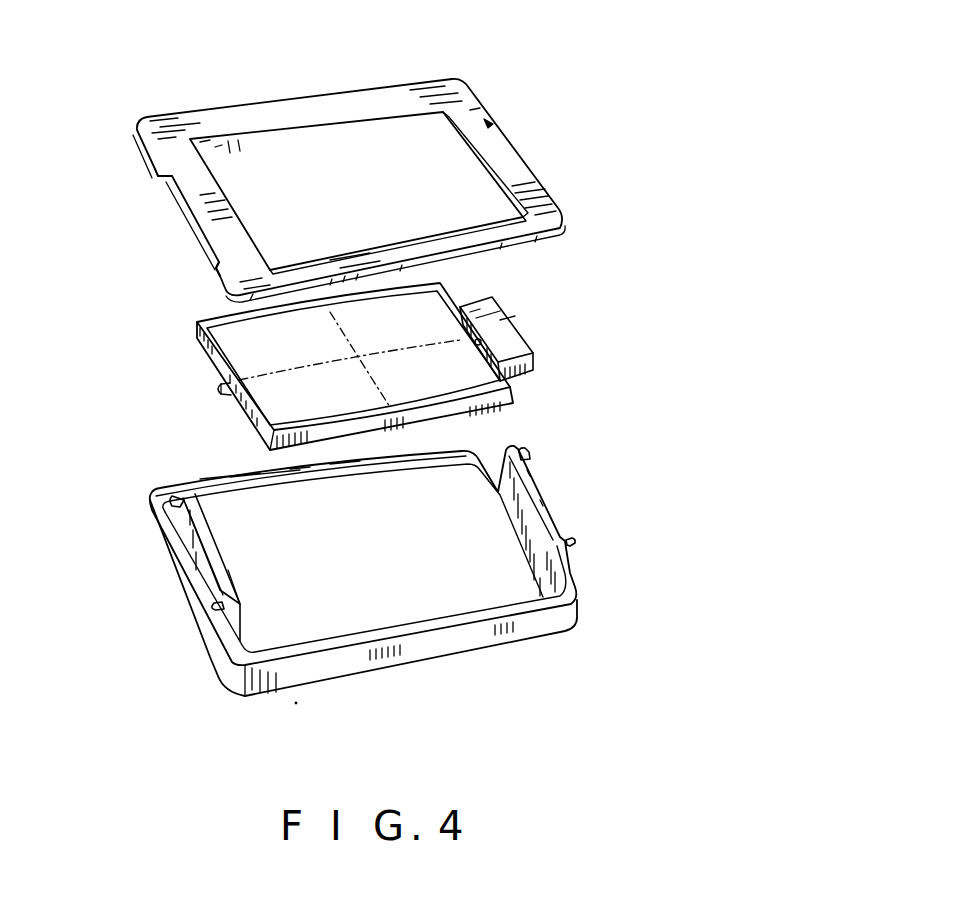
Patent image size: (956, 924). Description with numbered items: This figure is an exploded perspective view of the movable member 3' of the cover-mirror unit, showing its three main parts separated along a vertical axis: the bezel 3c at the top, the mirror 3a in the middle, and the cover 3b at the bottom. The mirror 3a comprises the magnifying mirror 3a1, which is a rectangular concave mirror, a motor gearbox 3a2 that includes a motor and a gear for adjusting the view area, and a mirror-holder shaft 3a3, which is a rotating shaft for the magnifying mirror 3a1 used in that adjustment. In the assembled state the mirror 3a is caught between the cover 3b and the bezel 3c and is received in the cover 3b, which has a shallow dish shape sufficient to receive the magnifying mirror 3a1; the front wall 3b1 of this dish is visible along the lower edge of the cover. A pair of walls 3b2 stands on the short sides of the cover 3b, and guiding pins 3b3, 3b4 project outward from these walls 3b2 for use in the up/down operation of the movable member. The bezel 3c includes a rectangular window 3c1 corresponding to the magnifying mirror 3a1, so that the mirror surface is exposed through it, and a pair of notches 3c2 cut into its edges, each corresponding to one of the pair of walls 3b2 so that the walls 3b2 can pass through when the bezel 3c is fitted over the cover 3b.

The movable member 3' is at (277, 750).
The mirror 3a is at (240, 423).
The magnifying mirror 3a1 is at (456, 396).
The motor gearbox 3a2 is at (517, 322).
The mirror-holder shaft 3a3 is at (218, 390).
The cover 3b is at (220, 672).
The front wall of lower frame 3b1 is at (420, 652).
The walls 3b2 is at (193, 548).
The guiding pin 3b3 is at (170, 502).
The guiding pin 3b4 is at (217, 607).
The bezel 3c is at (140, 162).
The rectangular window 3c1 is at (332, 129).
The notches 3c2 is at (197, 233).